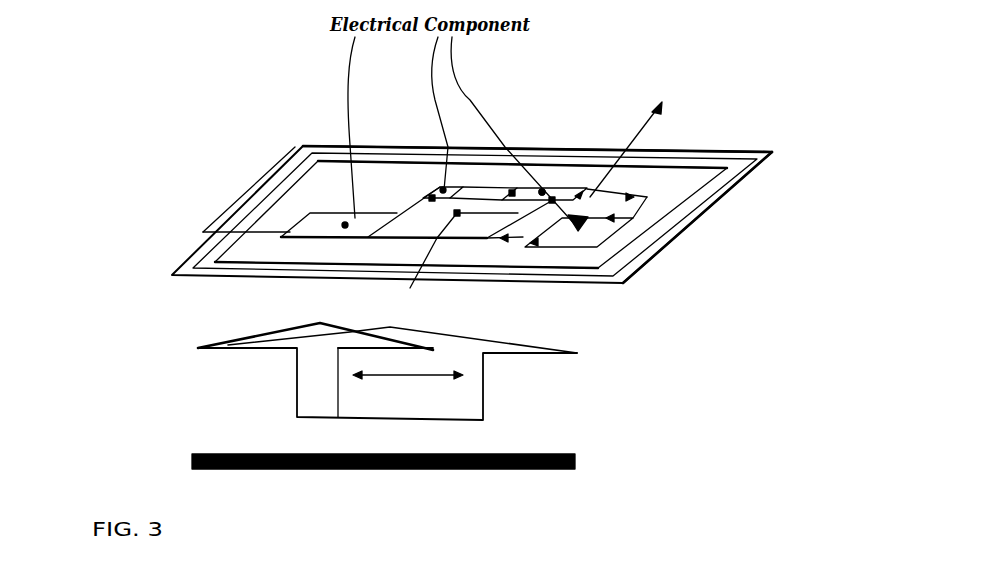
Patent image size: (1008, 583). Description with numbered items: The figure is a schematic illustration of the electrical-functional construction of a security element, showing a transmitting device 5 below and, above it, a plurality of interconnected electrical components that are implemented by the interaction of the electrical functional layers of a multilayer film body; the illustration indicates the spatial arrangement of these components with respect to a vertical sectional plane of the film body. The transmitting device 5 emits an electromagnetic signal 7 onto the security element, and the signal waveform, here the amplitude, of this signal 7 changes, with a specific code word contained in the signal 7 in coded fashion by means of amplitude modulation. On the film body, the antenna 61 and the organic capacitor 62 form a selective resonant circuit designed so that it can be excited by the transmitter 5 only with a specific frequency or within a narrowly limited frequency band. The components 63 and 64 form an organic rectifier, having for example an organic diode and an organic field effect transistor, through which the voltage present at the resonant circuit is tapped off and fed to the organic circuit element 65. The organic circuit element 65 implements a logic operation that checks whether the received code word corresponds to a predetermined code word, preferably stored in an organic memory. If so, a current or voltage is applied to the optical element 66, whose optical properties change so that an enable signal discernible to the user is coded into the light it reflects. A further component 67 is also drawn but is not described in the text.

The transmitting device 5 is at (187, 461).
The signal 7 is at (190, 348).
The antenna 61 is at (232, 200).
The organic capacitor 62 is at (343, 224).
The organic rectifier component 63 is at (432, 198).
The organic rectifier component 64 is at (465, 230).
The organic circuit element 65 is at (544, 190).
The optical element 66 is at (605, 232).
The electrical component 67 is at (542, 190).